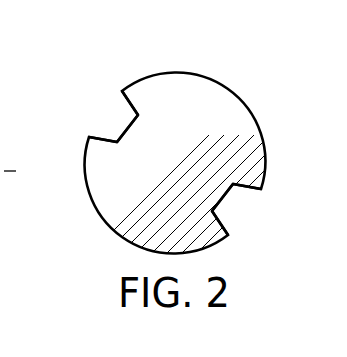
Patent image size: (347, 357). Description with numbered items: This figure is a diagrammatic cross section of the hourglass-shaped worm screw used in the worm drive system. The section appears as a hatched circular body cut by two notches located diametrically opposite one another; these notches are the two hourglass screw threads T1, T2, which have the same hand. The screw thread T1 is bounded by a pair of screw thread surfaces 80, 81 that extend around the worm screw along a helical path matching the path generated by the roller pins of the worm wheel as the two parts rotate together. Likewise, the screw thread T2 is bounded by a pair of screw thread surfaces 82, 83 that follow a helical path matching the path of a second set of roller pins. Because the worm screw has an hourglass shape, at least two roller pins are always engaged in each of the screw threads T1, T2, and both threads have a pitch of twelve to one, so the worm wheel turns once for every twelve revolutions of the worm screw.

The screw thread surface 80 is at (223, 221).
The screw thread surface 81 is at (258, 187).
The screw thread surface 82 is at (122, 91).
The screw thread surface 83 is at (95, 132).
The hourglass screw thread T1 is at (232, 201).
The hourglass screw thread T2 is at (112, 114).